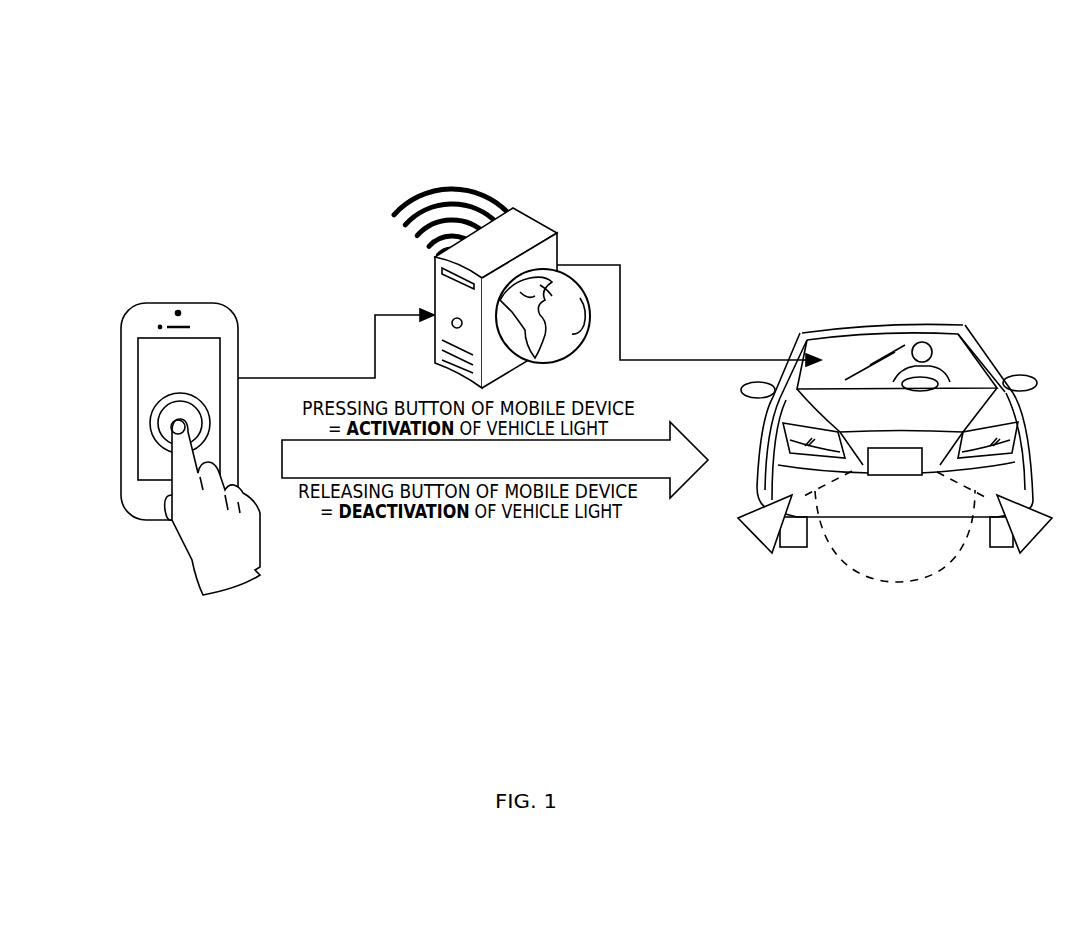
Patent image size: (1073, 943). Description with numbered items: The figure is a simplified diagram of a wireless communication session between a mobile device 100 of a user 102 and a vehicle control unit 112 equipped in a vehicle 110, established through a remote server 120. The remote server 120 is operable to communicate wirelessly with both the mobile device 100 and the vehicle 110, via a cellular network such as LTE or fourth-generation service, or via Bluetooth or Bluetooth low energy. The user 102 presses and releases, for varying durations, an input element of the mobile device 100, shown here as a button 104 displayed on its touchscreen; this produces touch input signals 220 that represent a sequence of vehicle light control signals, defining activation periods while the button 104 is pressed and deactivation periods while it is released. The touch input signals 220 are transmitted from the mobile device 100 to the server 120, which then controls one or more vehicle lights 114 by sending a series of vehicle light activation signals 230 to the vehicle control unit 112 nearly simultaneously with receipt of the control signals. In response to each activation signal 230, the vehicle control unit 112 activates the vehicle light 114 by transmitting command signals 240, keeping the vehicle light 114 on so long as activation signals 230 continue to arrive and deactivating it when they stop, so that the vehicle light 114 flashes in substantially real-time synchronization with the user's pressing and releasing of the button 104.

The mobile device 100 is at (177, 303).
The user 102 is at (182, 555).
The button 104 is at (150, 420).
The vehicle 110 is at (938, 322).
The vehicle control unit 112 is at (911, 473).
The vehicle light 114 is at (753, 537).
The remote server 120 is at (407, 200).
The touch input signals 220 is at (278, 378).
The vehicle light activation signals 230 is at (620, 303).
The command signals 240 is at (893, 532).